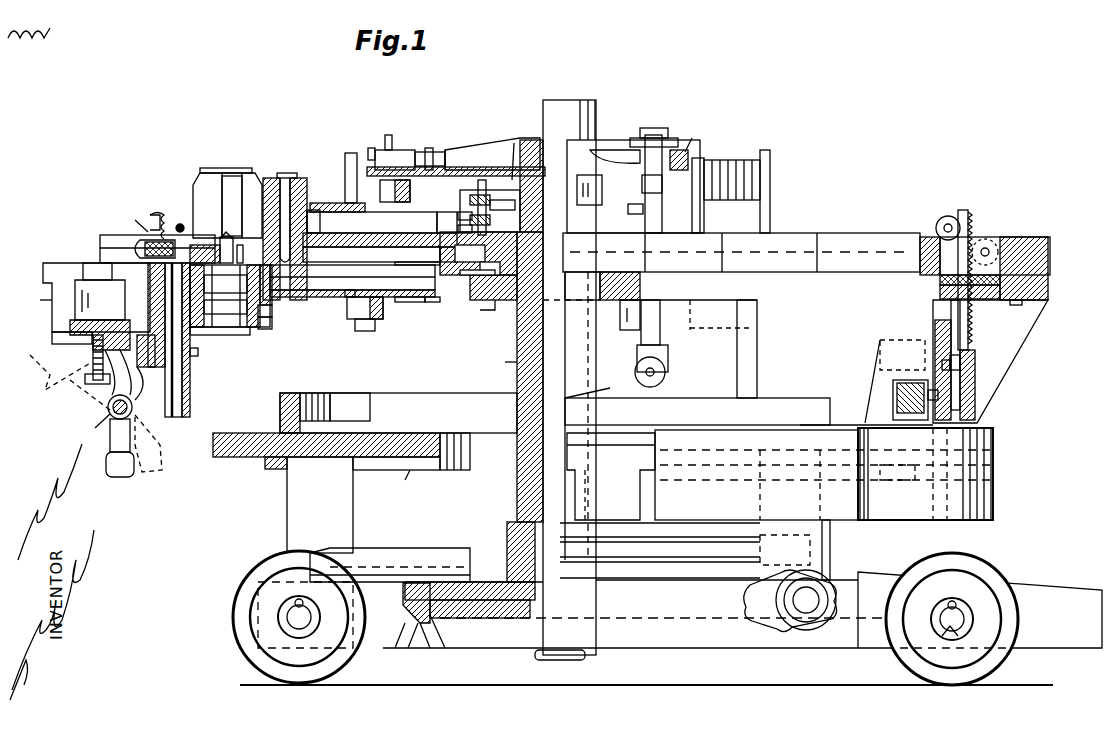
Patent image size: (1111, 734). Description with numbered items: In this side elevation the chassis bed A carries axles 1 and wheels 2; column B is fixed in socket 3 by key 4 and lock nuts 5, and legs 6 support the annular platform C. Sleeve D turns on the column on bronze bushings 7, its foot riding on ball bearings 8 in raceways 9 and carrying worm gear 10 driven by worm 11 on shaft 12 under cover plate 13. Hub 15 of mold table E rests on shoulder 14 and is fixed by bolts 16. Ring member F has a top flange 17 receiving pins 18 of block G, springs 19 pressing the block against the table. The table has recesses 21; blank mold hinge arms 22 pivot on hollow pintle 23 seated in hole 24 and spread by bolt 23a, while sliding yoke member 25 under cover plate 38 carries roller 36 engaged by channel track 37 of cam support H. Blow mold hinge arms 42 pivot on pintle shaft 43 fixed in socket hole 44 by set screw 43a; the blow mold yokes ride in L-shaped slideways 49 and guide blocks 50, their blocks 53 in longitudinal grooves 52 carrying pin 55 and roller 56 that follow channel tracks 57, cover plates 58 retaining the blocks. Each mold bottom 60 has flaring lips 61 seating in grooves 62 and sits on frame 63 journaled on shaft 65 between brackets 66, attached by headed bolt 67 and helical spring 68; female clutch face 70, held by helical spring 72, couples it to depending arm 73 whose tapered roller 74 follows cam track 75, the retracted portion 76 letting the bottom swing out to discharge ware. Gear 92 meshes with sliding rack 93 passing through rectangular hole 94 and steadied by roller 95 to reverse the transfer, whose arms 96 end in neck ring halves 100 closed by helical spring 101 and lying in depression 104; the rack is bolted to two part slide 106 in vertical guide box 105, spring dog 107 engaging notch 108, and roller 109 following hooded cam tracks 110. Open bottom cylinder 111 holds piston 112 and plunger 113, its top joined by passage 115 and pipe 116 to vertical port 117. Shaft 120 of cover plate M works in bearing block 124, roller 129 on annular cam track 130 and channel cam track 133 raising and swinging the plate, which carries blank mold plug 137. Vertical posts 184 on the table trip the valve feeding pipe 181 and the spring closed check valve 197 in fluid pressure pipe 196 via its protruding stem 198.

The axles 1 is at (296, 618).
The wheels 2 is at (625, 618).
The socket 3 is at (520, 612).
The key 4 is at (512, 503).
The lock nuts 5 is at (535, 655).
The legs 6 is at (835, 535).
The bronze bushings 7 is at (512, 480).
The ball bearings 8 is at (406, 626).
The raceways 9 is at (428, 642).
The annular worm gear 10 is at (762, 600).
The worm 11 is at (790, 606).
The shaft 12 is at (800, 612).
The annular cover plate 13 is at (403, 548).
The shoulder 14 is at (470, 275).
The hub 15 is at (485, 275).
The bolts 16 is at (488, 290).
The horizontal top flange 17 is at (470, 200).
The pins 18 is at (538, 210).
The springs 19 is at (547, 204).
The recesses 21 is at (115, 238).
The hinge arms 22 is at (305, 190).
The hollow pintle 23 is at (272, 180).
The bolt 23a is at (296, 162).
The hole 24 is at (312, 290).
The sliding yoke member 25 is at (316, 210).
The roller 36 is at (405, 190).
The channel track 37 is at (484, 138).
The cover plate 38 is at (344, 197).
The hinge arms 42 is at (150, 310).
The pintle shaft 43 is at (178, 395).
The set screw 43a is at (210, 346).
The socket hole 44 is at (183, 370).
The L-shaped slideways 49 is at (428, 297).
The guide blocks 50 is at (418, 302).
The longitudinal grooves 52 is at (435, 302).
The blocks 53 is at (246, 300).
The pin 55 is at (355, 320).
The roller 56 is at (372, 320).
The channel tracks 57 is at (745, 312).
The cover plates 58 is at (345, 300).
The blow mold bottoms 60 is at (80, 362).
The circumferential lips 61 is at (52, 344).
The grooves 62 is at (70, 322).
The frame 63 is at (144, 383).
The shaft 65 is at (108, 413).
The brackets 66 is at (133, 405).
The headed bolt 67 is at (92, 385).
The helical spring 68 is at (90, 372).
The female clutch face 70 is at (611, 476).
The helical spring 72 is at (112, 430).
The depending arm 73 is at (148, 451).
The tapered roller 74 is at (110, 470).
The cam track 75 is at (775, 504).
The retracted portion 76 is at (868, 497).
The gear 92 is at (993, 245).
The sliding rack 93 is at (122, 197).
The rectangular hole 94 is at (940, 290).
The roller 95 is at (936, 222).
The arms 96 is at (202, 170).
The neck ring halves 100 is at (230, 235).
The helical spring 101 is at (158, 215).
The depression 104 is at (196, 245).
The vertical guide box 105 is at (924, 362).
The two part slide 106 is at (937, 322).
The spring dog 107 is at (950, 365).
The notch 108 is at (958, 372).
The roller 109 is at (900, 392).
The hooded cam tracks 110 is at (895, 353).
The open bottom cylinder 111 is at (265, 317).
The piston 112 is at (262, 329).
The plunger 113 is at (236, 245).
The passage 115 is at (272, 292).
The pipe 116 is at (380, 237).
The vertical port 117 is at (441, 237).
The shaft 120 is at (660, 145).
The bearing block 124 is at (637, 286).
The roller 129 is at (666, 372).
The annular cam track 130 is at (296, 397).
The channel cam track 133 is at (350, 410).
The blank mold plug 137 is at (700, 158).
The pipe 181 is at (435, 150).
The vertical posts 184 is at (750, 213).
The fluid pressure pipe 196 is at (388, 135).
The spring closed check valve 197 is at (405, 150).
The protruding stem 198 is at (370, 148).